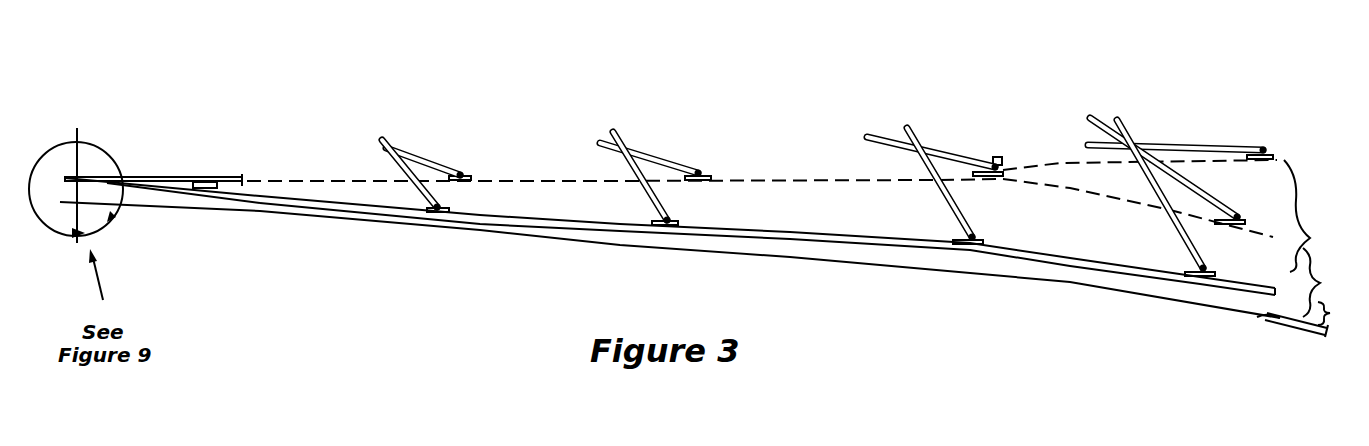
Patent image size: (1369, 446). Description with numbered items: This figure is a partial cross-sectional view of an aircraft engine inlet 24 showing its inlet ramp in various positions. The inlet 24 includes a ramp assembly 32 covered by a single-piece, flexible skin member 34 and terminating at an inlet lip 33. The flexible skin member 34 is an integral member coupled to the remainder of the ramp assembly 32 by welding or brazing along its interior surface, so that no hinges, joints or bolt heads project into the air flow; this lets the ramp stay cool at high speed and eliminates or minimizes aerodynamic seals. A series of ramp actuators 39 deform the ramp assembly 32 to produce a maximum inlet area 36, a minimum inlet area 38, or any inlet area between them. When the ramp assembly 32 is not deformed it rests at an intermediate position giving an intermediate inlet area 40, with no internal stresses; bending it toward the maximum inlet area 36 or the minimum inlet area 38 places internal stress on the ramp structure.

The inlet 24 is at (1270, 307).
The ramp assembly 32 is at (1127, 312).
The inlet lip 33 is at (1313, 335).
The flexible skin member 34 is at (1006, 252).
The maximum inlet area 36 is at (1317, 216).
The minimum inlet area 38 is at (1341, 314).
The ramp actuators 39 is at (385, 112).
The intermediate inlet area 40 is at (1333, 282).